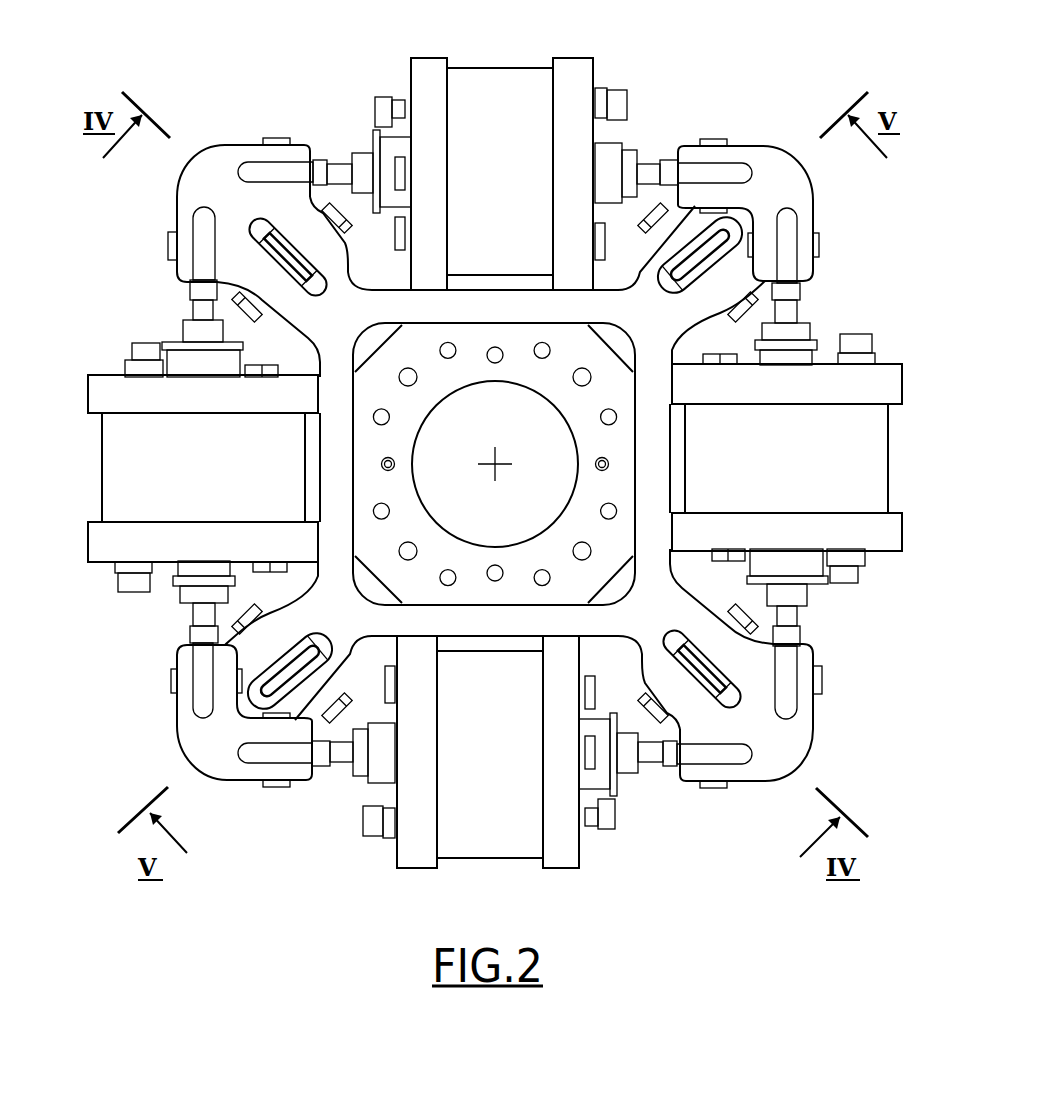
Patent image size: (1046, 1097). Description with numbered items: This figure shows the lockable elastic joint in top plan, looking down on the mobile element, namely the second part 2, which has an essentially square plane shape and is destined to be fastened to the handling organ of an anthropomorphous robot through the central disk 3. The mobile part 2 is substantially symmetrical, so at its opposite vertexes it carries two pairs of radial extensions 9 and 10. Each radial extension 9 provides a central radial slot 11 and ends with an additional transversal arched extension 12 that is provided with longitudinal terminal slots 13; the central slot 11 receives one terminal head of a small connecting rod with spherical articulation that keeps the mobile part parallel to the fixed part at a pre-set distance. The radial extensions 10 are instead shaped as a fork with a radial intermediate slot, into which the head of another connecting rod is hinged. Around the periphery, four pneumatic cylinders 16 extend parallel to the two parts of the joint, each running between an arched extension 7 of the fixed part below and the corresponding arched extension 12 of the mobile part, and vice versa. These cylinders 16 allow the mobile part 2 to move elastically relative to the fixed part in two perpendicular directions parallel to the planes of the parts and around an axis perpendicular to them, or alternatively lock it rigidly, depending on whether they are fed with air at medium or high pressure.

The second part 2 is at (472, 278).
The disk 3 is at (415, 513).
The arched extensions 7 is at (795, 190).
The radial extensions 9 is at (247, 207).
The radial extensions 10 is at (699, 290).
The central radial slot 11 is at (323, 283).
The transversal arched extension 12 is at (193, 185).
The longitudinal terminal slots 13 is at (728, 163).
The pneumatic cylinders 16 is at (472, 87).